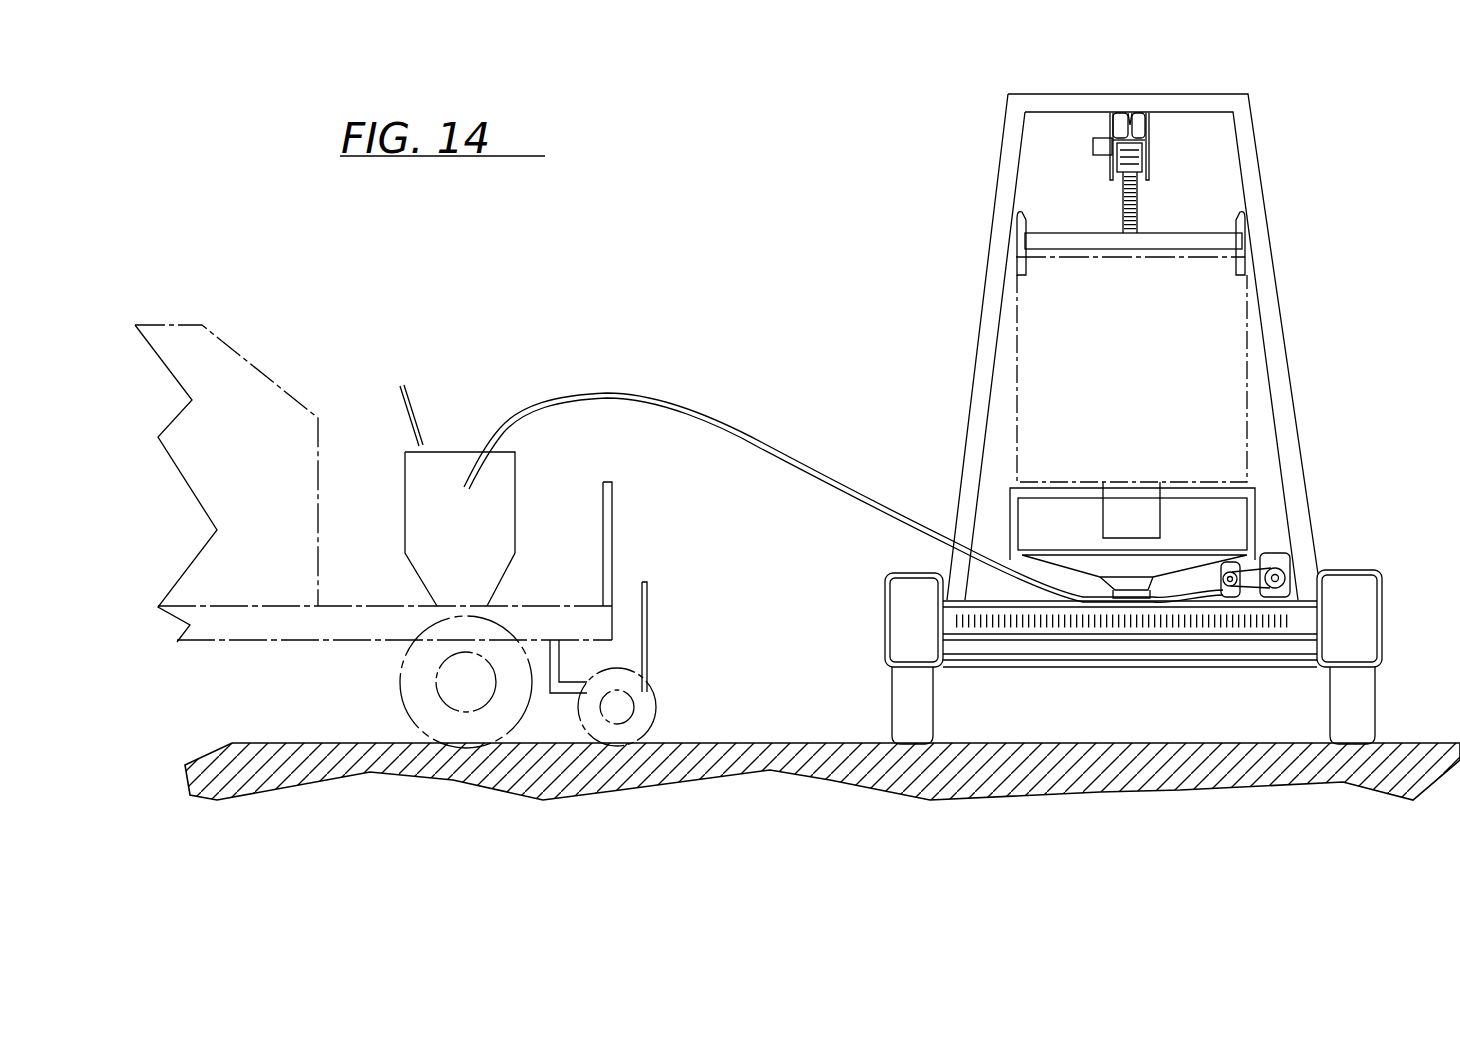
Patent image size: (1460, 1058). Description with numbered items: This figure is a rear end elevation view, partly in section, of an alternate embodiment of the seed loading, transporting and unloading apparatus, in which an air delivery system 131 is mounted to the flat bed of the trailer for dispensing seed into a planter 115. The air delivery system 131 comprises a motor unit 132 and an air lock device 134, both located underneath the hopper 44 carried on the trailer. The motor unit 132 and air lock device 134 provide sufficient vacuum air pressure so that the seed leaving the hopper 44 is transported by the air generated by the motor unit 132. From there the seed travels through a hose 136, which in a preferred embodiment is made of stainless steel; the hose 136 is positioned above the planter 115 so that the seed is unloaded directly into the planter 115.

The planter 115 is at (400, 460).
The stainless steel hose 136 is at (763, 438).
The hopper 44 is at (1158, 565).
The air lock device 134 is at (1162, 573).
The air delivery system 131 is at (1288, 565).
The motor unit 132 is at (1290, 575).